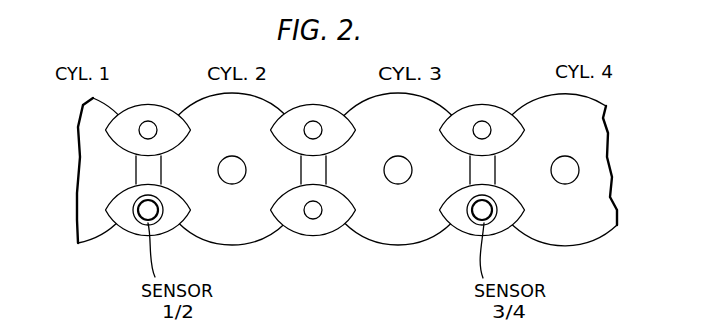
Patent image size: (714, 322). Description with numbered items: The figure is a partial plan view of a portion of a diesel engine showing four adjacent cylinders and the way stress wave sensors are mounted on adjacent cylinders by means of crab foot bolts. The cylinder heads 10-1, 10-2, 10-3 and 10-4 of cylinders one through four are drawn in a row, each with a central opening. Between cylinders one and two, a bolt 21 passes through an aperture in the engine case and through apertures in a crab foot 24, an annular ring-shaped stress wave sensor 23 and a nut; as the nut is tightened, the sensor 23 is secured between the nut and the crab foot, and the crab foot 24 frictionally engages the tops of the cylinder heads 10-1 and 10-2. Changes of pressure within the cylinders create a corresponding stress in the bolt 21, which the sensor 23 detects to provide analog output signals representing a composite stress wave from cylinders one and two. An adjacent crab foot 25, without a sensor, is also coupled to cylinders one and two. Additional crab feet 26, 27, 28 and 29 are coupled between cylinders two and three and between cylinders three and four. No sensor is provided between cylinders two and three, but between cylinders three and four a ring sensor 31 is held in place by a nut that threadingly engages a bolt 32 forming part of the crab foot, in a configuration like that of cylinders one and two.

The cylinder head 10-1 is at (100, 109).
The cylinder head 10-2 is at (261, 109).
The cylinder head 10-3 is at (427, 108).
The cylinder head 10-4 is at (592, 108).
The bolt 21 is at (137, 205).
The stress wave sensor 23 is at (141, 223).
The crab foot 24 is at (162, 231).
The crab foot 25 is at (178, 127).
The crab foot 26 is at (327, 224).
The crab foot 27 is at (347, 127).
The crab foot 28 is at (454, 230).
The crab foot 29 is at (512, 128).
The ring sensor 31 is at (496, 205).
The bolt 32 is at (489, 223).